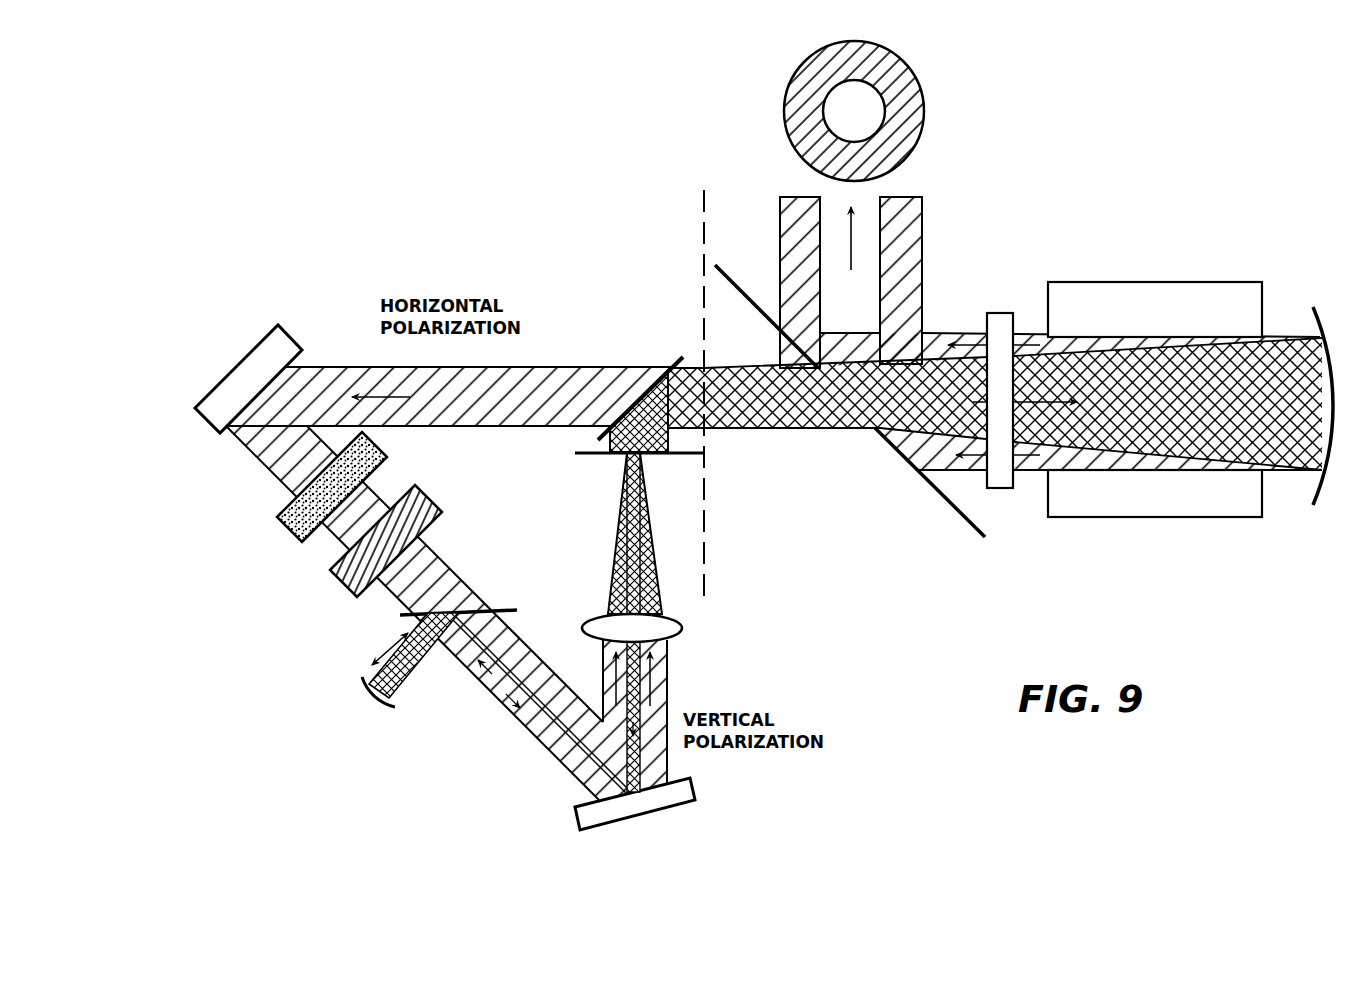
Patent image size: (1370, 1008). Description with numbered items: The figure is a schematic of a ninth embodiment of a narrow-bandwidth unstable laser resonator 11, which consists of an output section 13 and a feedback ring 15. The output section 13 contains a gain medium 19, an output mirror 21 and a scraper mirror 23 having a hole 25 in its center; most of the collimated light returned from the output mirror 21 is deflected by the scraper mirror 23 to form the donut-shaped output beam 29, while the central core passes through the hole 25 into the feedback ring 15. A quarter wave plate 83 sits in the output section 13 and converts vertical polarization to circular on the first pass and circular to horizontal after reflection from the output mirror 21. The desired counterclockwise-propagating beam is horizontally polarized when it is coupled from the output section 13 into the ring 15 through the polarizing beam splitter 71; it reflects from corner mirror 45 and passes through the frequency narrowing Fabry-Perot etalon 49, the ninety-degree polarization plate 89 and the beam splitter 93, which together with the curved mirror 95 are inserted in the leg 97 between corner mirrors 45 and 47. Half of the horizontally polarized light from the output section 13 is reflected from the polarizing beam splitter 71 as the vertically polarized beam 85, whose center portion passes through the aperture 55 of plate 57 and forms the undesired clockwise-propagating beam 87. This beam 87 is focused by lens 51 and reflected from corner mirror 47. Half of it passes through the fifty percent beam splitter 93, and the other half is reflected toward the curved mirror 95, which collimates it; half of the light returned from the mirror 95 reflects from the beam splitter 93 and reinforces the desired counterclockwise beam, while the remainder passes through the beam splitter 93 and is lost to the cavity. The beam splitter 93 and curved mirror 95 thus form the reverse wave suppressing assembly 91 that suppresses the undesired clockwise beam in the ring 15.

The unstable laser resonator 11 is at (626, 120).
The output section 13 is at (1084, 216).
The feedback ring 15 is at (475, 208).
The gain medium 19 is at (1170, 264).
The output mirror 21 is at (1306, 490).
The scraper mirror 23 is at (987, 527).
The hole 25 is at (847, 406).
The output beam 29 is at (920, 233).
The corner mirror 45 is at (240, 362).
The corner mirror 47 is at (665, 812).
The Fabry-Perot etalon 49 is at (298, 537).
The lens 51 is at (681, 630).
The aperture 55 is at (642, 458).
The plate 57 is at (703, 452).
The polarizing beam splitter 71 is at (679, 358).
The quarter wave plate 83 is at (1000, 313).
The vertically polarized beam 85 is at (597, 443).
The clockwise-propagating beam 87 is at (626, 482).
The 90° polarization plate 89 is at (433, 497).
The reverse wave suppressing assembly 91 is at (430, 680).
The 50% beam splitter 93 is at (506, 601).
The curved mirror 95 is at (364, 689).
The leg 97 is at (471, 571).